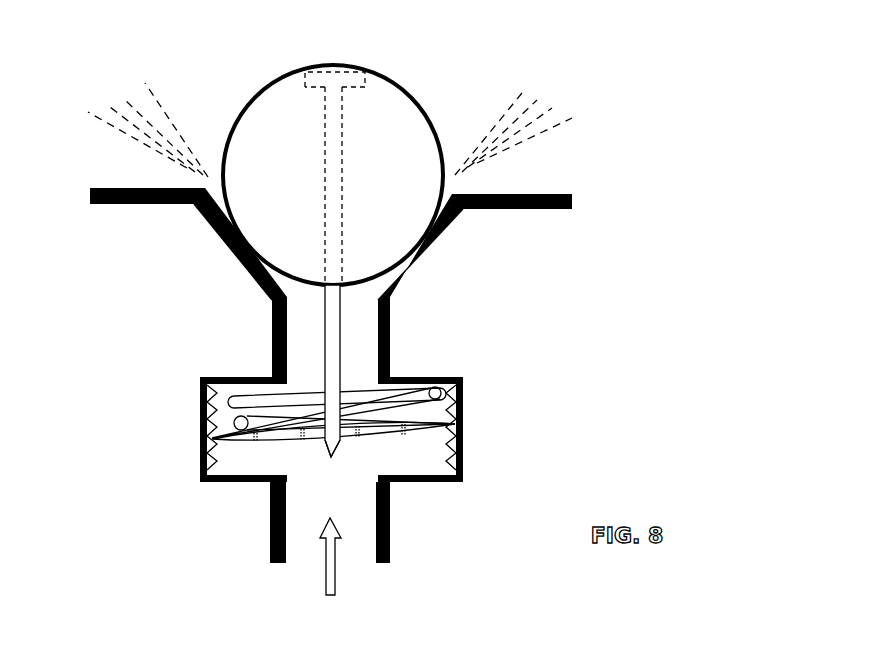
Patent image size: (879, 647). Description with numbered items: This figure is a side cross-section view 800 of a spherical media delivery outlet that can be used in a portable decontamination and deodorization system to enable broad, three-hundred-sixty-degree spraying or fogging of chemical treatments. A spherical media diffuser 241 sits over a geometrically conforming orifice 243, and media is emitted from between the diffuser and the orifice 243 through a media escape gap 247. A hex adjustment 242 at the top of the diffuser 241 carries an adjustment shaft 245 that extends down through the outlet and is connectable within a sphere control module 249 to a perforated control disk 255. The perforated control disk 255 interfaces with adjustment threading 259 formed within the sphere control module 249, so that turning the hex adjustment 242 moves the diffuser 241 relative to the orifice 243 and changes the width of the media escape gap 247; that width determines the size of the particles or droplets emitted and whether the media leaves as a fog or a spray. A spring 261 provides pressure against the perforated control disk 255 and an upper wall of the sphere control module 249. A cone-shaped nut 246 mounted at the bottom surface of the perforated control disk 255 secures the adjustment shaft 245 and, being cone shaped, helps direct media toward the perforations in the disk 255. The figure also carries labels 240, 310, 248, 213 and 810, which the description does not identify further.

The side view 800 is at (678, 76).
The valve module 240 is at (316, 268).
The spherical media diffuser 241 is at (418, 108).
The hex adjustment 242 is at (352, 78).
The adjustment shaft 245 is at (333, 211).
The geometrically conforming orifice 243 is at (170, 203).
The media escape gap 247 is at (297, 287).
The spray 310 is at (563, 134).
The adjustment threading 259 is at (218, 378).
The spring 261 is at (200, 408).
The right biasing member 248 is at (473, 410).
The sphere control module 249 is at (380, 453).
The spring coil turn 213 is at (377, 430).
The perforated control disk 255 is at (406, 442).
The cone-shaped nut 246 is at (325, 446).
The inlet flow 810 is at (330, 571).